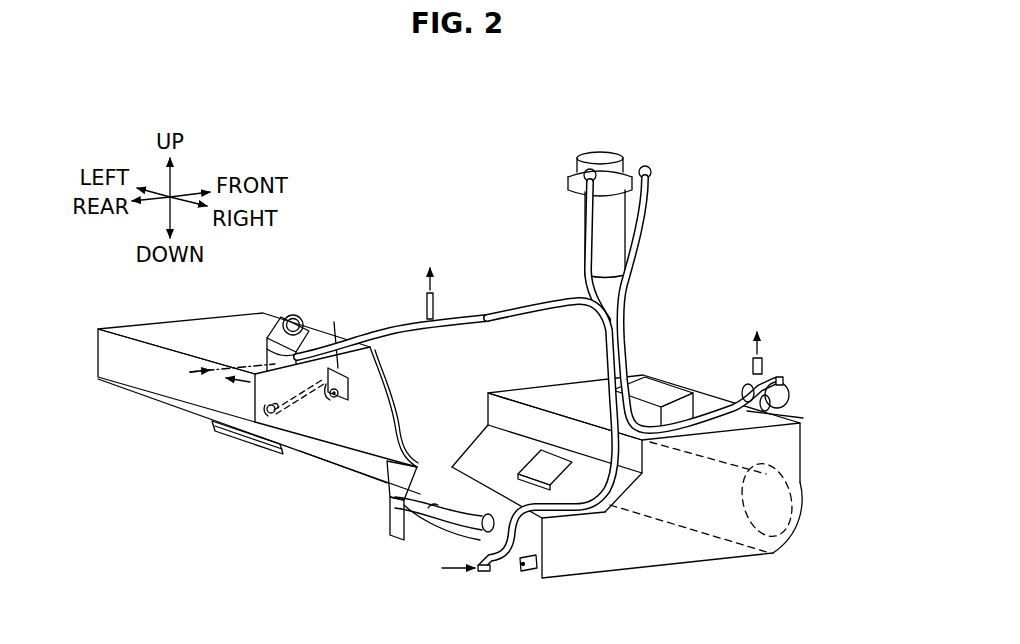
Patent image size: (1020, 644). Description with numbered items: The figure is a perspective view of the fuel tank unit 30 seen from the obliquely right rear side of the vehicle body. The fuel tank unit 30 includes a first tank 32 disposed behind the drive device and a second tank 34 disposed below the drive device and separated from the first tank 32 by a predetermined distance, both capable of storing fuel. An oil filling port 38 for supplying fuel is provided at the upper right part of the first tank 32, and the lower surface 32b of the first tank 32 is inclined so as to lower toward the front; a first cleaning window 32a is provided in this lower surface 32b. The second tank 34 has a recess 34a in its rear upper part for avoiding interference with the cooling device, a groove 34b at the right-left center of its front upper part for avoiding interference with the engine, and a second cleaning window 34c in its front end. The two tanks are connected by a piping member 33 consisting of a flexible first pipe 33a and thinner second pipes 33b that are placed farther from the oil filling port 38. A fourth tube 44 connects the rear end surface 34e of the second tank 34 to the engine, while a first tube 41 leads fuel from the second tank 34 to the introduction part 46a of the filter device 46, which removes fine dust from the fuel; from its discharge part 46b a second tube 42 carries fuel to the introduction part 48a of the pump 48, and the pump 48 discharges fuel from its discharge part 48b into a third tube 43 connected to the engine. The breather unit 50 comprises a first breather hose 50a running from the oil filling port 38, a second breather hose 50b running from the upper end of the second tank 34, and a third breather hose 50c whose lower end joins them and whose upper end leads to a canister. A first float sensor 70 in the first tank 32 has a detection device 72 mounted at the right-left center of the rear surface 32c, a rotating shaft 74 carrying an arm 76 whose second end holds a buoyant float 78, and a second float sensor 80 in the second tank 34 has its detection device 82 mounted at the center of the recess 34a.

The fuel tank unit 30 is at (750, 201).
The first tank 32 is at (163, 418).
The first cleaning window 32a is at (242, 447).
The lower surface 32b is at (337, 473).
The rear surface 32c is at (402, 431).
The piping member 33 is at (381, 553).
The first pipe 33a is at (398, 528).
The second pipe 33b is at (387, 527).
The second tank 34 is at (639, 485).
The recess 34a is at (498, 435).
The groove 34b is at (678, 412).
The second cleaning window 34c is at (792, 518).
The rear end surface 34e is at (535, 530).
The oil filling port 38 is at (293, 314).
The first tube 41 is at (563, 512).
The second tube 42 is at (583, 290).
The third tube 43 is at (753, 370).
The fourth tube 44 is at (525, 572).
The filter device 46 is at (605, 198).
The introduction part 46a is at (652, 174).
The discharge part 46b is at (568, 173).
The pump 48 is at (781, 367).
The introduction part 48a is at (783, 381).
The discharge part 48b is at (771, 377).
The breather unit 50 is at (456, 388).
The first breather hose 50a is at (390, 325).
The second breather hose 50b is at (488, 319).
The third breather hose 50c is at (434, 320).
The first float sensor 70 is at (358, 389).
The detection device 72 is at (349, 395).
The rotating shaft 74 is at (334, 400).
The arm 76 is at (330, 332).
The float 78 is at (277, 411).
The second float sensor 80 is at (553, 450).
The detection device 82 is at (522, 470).